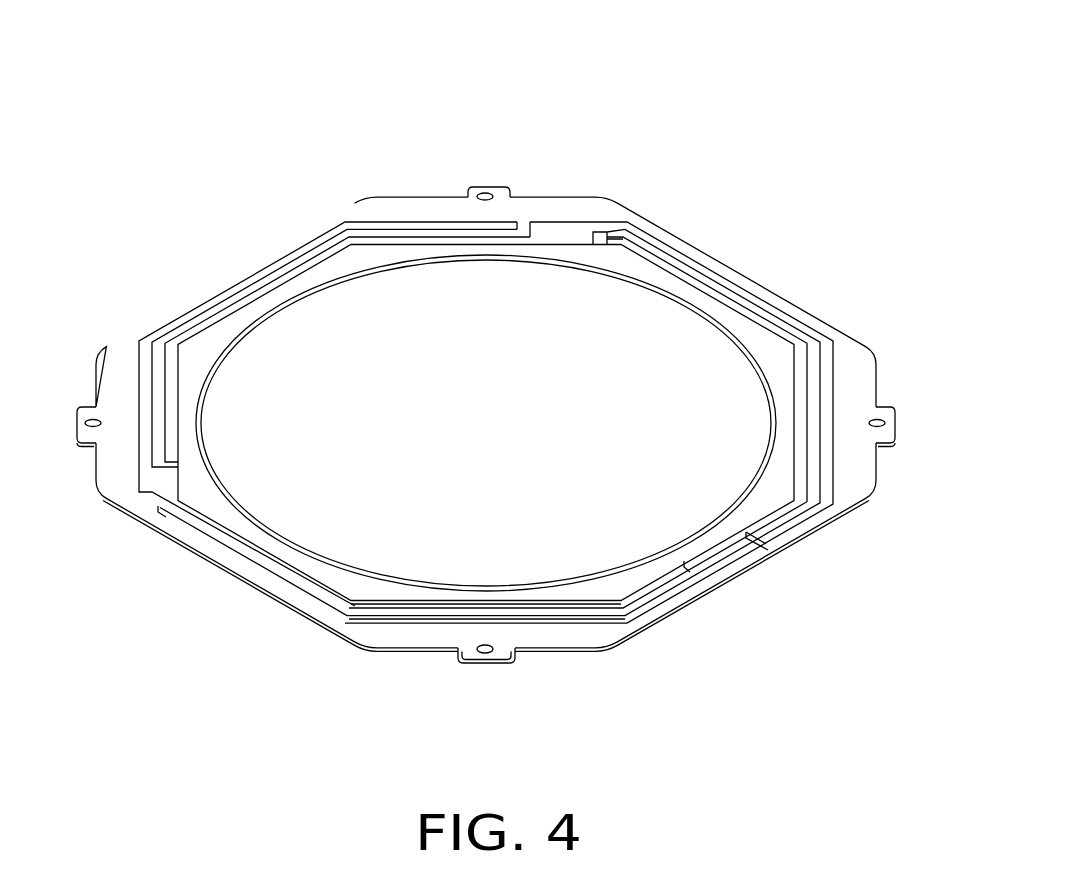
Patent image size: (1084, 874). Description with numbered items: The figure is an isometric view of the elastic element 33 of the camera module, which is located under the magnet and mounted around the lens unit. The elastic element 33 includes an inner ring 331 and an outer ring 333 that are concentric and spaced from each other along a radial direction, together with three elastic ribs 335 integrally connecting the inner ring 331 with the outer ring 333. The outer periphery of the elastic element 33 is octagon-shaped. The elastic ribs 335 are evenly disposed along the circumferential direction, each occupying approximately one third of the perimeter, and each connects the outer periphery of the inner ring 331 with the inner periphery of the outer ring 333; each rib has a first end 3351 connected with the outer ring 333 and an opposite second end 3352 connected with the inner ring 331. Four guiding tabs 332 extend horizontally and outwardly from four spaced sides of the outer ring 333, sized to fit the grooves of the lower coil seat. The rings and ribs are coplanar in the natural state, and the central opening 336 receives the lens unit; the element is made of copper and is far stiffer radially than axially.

The elastic element 33 is at (510, 51).
The inner ring 331 is at (760, 347).
The guiding tabs 332 is at (481, 188).
The outer ring 333 is at (684, 238).
The elastic ribs 335 is at (712, 287).
The first end 3351 is at (763, 534).
The second end 3352 is at (597, 237).
The circular opening 336 is at (317, 368).